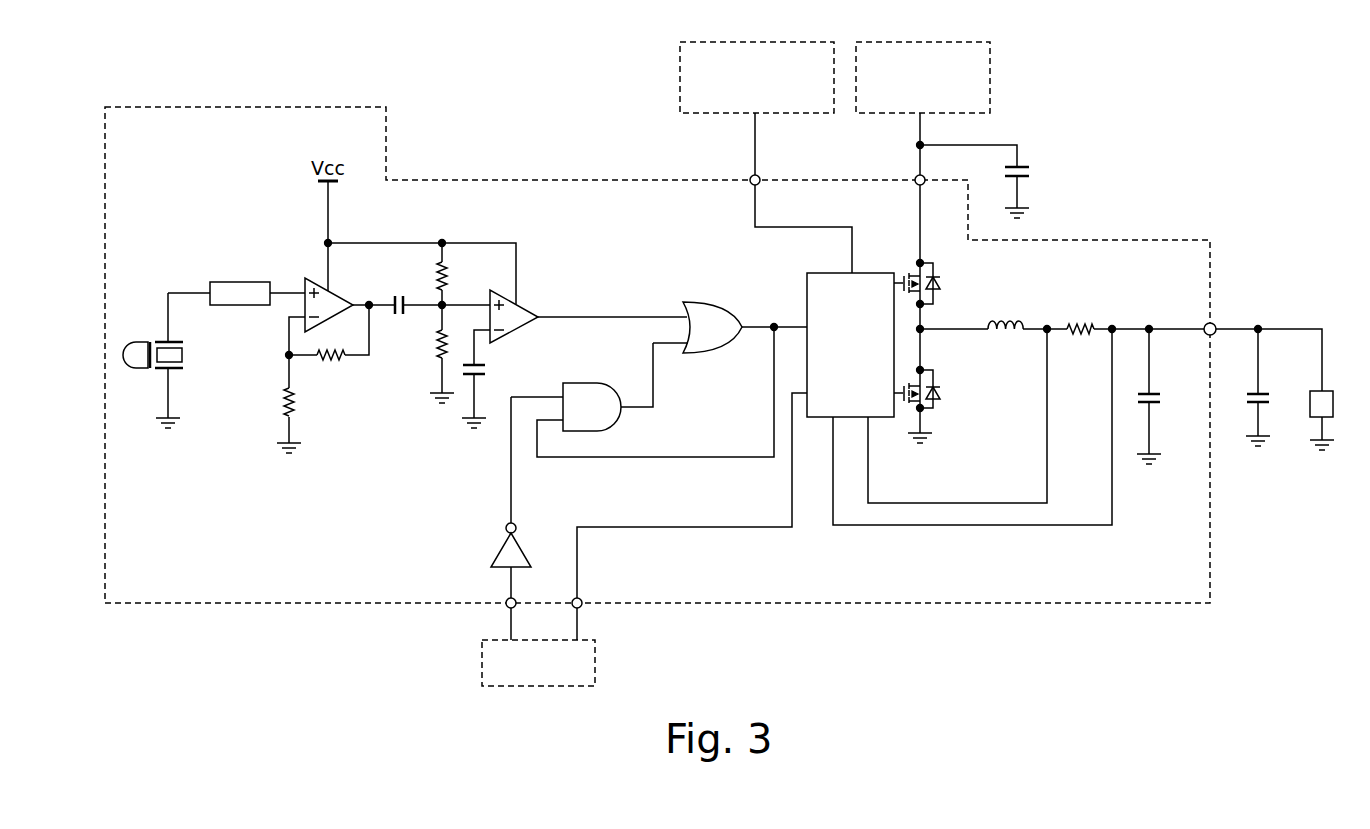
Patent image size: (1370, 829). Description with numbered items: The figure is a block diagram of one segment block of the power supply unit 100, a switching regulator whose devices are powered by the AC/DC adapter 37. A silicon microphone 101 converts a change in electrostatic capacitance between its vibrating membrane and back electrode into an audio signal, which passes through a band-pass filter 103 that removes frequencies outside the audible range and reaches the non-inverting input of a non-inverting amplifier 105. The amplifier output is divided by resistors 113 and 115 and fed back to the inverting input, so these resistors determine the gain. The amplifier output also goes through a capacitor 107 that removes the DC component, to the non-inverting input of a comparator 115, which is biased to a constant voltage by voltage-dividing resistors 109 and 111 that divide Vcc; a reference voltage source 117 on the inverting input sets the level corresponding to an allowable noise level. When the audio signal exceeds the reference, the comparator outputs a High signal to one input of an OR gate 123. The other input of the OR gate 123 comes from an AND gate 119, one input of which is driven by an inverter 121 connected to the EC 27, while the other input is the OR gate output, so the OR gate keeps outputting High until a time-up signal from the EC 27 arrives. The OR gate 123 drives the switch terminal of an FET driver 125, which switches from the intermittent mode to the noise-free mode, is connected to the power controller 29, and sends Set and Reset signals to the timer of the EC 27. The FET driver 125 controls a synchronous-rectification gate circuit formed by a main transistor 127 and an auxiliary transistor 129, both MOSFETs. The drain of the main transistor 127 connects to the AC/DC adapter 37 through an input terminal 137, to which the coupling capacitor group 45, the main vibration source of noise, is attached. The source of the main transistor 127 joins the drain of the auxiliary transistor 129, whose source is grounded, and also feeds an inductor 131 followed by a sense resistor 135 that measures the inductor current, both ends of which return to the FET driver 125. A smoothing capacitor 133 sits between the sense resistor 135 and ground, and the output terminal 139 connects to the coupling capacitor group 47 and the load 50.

The power supply unit 100 is at (171, 151).
The silicon microphone 101 is at (183, 356).
The band-pass filter 103 is at (245, 282).
The non-inverting amplifier 105 is at (348, 301).
The capacitor 107 is at (399, 296).
The voltage-dividing resistor 109 is at (445, 276).
The voltage-dividing resistor 111 is at (439, 342).
The resistor 113 is at (336, 362).
The resistor / comparator 115 is at (287, 402).
The reference voltage source 117 is at (485, 371).
The AND gate 119 is at (586, 383).
The inverter 121 is at (546, 547).
The OR gate 123 is at (738, 304).
The FET driver 125 is at (882, 261).
The main transistor 127 is at (937, 286).
The auxiliary transistor 129 is at (937, 394).
The inductor 131 is at (1021, 322).
The smoothing capacitor 133 is at (1161, 399).
The sense resistor 135 is at (1090, 312).
The input terminal 137 is at (915, 176).
The output terminal 139 is at (1217, 324).
The power controller 29 is at (758, 42).
The AC/DC adapter 37 is at (918, 42).
The coupling capacitor group 45 is at (1031, 174).
The coupling capacitor group 47 is at (1272, 398).
The load 50 is at (1331, 392).
The EC 27 is at (594, 669).